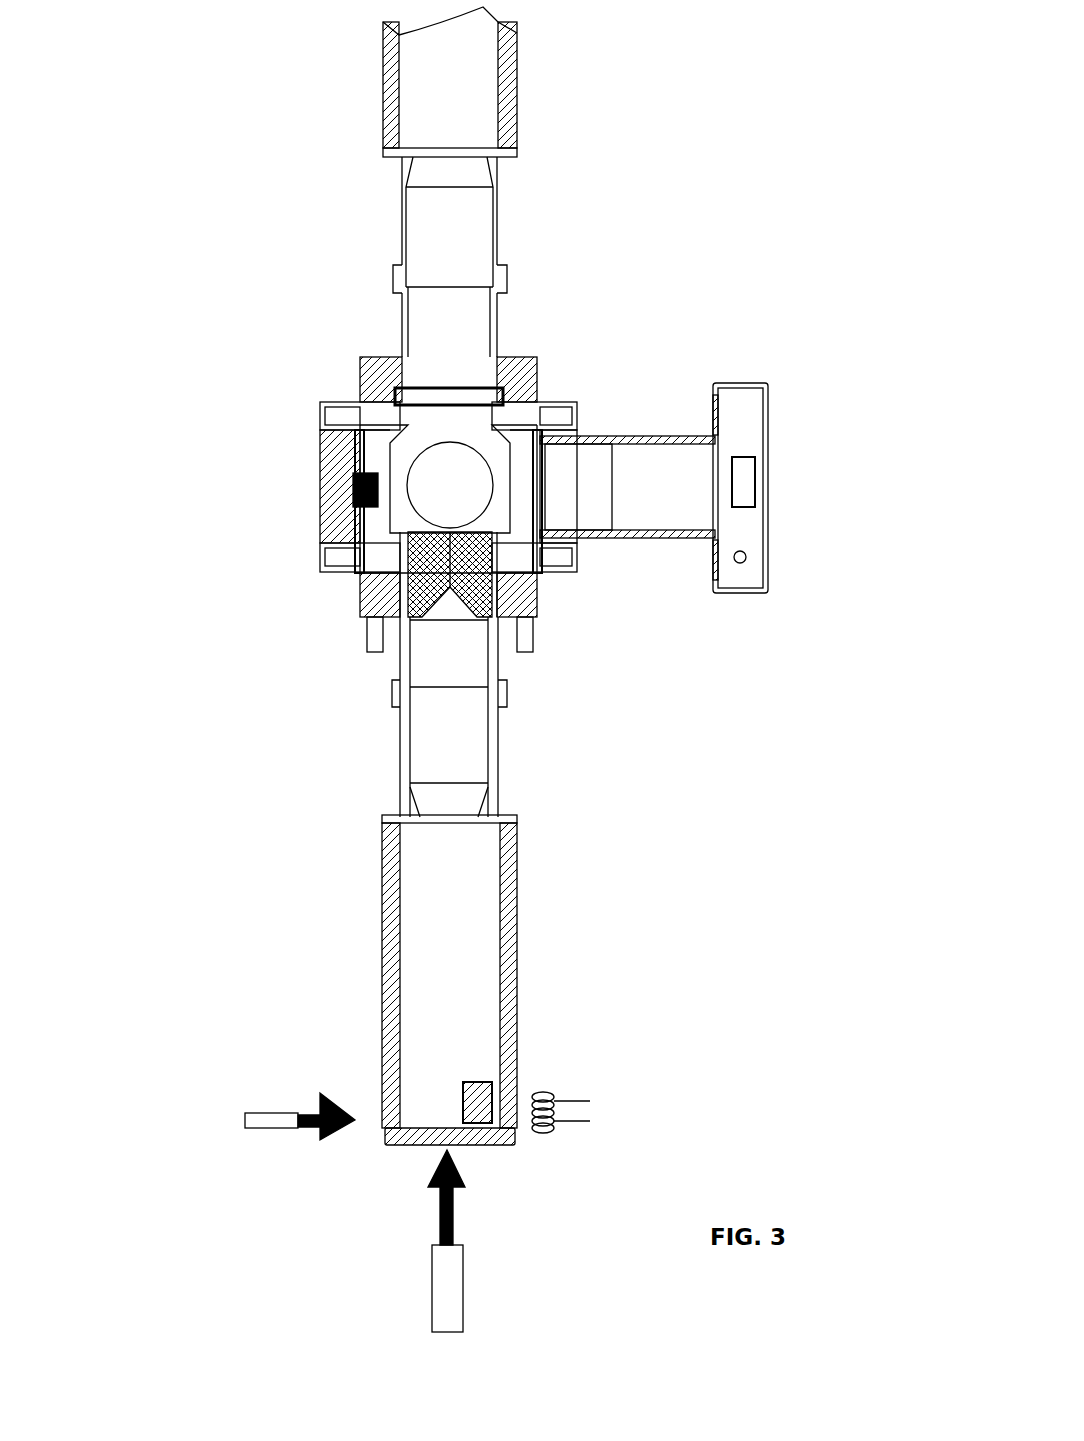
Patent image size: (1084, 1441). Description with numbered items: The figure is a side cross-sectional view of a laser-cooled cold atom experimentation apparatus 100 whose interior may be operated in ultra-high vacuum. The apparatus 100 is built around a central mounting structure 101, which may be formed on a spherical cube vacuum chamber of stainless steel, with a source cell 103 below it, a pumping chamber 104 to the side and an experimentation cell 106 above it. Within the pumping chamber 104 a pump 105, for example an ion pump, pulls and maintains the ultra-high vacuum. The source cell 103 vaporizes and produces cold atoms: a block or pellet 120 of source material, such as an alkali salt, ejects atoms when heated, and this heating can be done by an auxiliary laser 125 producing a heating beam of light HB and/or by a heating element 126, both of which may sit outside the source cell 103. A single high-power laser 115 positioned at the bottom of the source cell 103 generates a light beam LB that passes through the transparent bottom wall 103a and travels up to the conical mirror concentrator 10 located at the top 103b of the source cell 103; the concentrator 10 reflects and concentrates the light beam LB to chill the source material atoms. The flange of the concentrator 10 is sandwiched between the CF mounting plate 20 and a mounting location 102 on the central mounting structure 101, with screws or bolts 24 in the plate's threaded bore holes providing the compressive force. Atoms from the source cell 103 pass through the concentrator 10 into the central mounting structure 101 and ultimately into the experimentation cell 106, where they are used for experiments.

The laser-cooled cold atom experimentation apparatus 100 is at (196, 90).
The experimentation cell 106 is at (458, 163).
The central mounting structure 101 is at (411, 460).
The conical mirror concentrator 10 is at (353, 490).
The mounting location 102 is at (358, 573).
The CF mounting plate 20 is at (543, 600).
The screws or bolts 24 is at (373, 659).
The pumping chamber 104 is at (752, 562).
The pump 105 is at (747, 478).
The top of the source cell 103b is at (506, 733).
The source cell 103 is at (472, 1000).
The bottom wall of the source cell 103a is at (463, 1147).
The block or pellet of source material 120 is at (492, 1082).
The heating element 126 is at (571, 1108).
The auxiliary laser 125 is at (248, 1105).
The heating beam of light HB is at (314, 1103).
The light beam LB is at (414, 1198).
The high-power laser 115 is at (438, 1298).